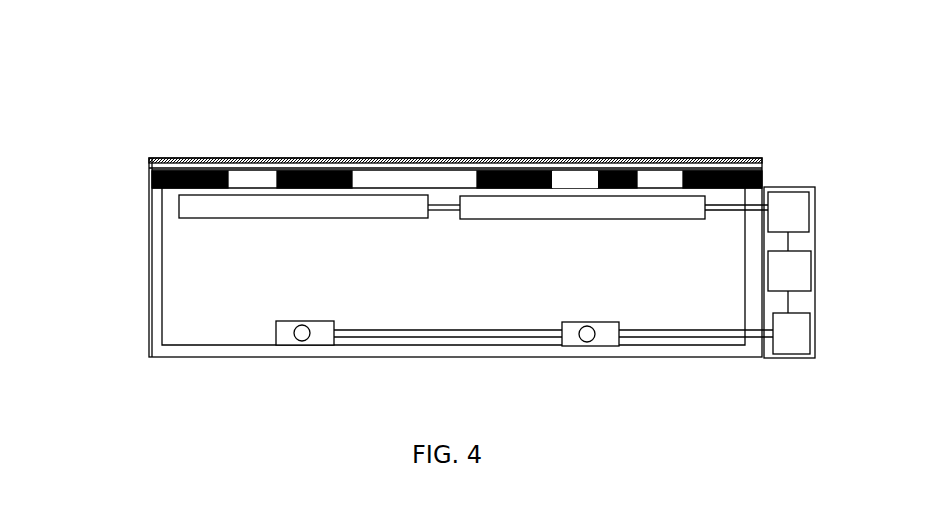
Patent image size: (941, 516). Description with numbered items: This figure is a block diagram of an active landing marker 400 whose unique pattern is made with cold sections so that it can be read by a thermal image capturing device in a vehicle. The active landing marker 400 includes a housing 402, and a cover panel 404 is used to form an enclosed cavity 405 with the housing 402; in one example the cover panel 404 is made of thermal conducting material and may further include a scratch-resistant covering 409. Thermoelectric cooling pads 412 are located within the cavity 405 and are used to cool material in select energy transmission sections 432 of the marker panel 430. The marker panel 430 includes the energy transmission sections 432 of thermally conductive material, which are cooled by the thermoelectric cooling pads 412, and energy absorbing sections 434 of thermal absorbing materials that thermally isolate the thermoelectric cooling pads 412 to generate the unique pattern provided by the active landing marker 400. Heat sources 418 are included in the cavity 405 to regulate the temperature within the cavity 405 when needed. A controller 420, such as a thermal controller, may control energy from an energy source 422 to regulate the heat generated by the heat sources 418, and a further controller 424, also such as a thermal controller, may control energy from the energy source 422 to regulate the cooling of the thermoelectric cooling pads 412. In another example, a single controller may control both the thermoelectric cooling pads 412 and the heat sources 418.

The active landing marker 400 is at (818, 118).
The housing 402 is at (158, 270).
The cover panel 404 is at (174, 163).
The cavity 405 is at (182, 297).
The scratch-resistant covering 409 is at (212, 160).
The thermoelectric cooling pads 412 is at (290, 208).
The heat sources 418 is at (315, 322).
The controller 420 is at (807, 347).
The energy source 422 is at (805, 282).
The controller 424 is at (805, 223).
The marker panel 430 is at (149, 186).
The energy transmission sections 432 is at (578, 180).
The energy absorbing sections 434 is at (718, 168).